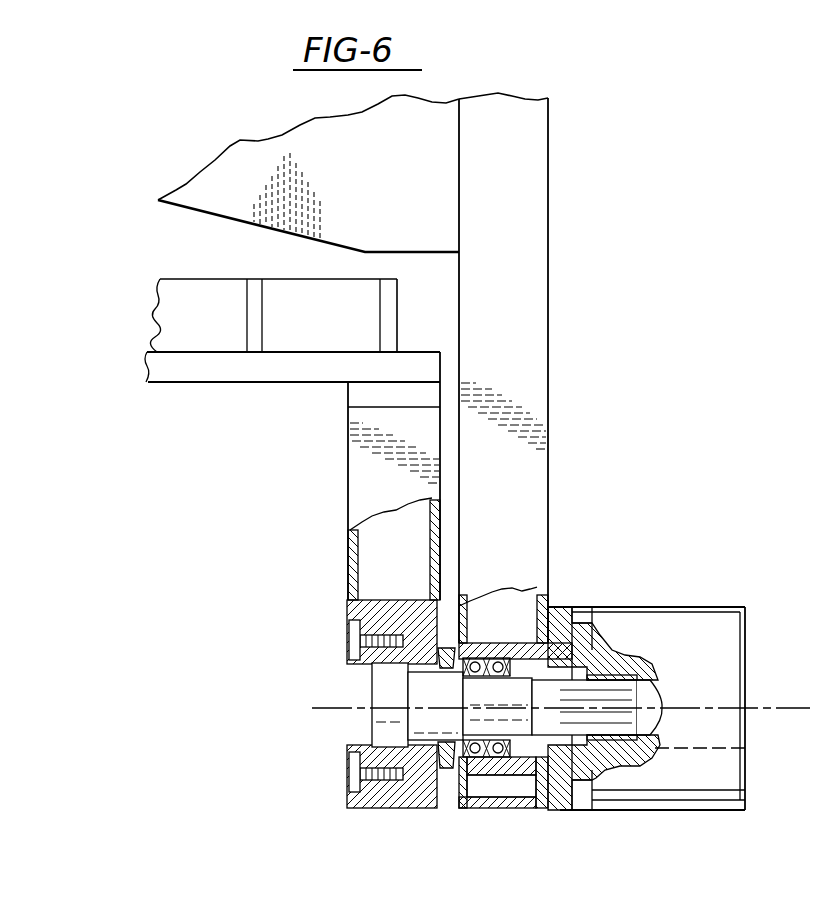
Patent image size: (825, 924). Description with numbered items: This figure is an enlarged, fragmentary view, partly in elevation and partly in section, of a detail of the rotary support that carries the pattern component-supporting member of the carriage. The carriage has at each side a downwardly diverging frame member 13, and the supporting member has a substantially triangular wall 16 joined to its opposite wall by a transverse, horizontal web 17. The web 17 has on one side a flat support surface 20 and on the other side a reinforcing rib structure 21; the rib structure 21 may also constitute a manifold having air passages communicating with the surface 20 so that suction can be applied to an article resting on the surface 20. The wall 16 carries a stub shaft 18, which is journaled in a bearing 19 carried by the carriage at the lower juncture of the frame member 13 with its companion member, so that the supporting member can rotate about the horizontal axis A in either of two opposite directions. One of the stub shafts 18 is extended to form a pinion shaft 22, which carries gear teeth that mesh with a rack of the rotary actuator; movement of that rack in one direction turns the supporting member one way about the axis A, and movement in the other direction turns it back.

The downwardly diverging frame member 13 is at (545, 317).
The triangular wall 16 is at (352, 485).
The web 17 is at (190, 375).
The stub shaft 18 is at (380, 722).
The bearing 19 is at (487, 643).
The flat support surface 20 is at (292, 382).
The reinforcing rib structure 21 is at (170, 284).
The pinion shaft 22 is at (628, 662).
The horizontal axis A is at (782, 706).